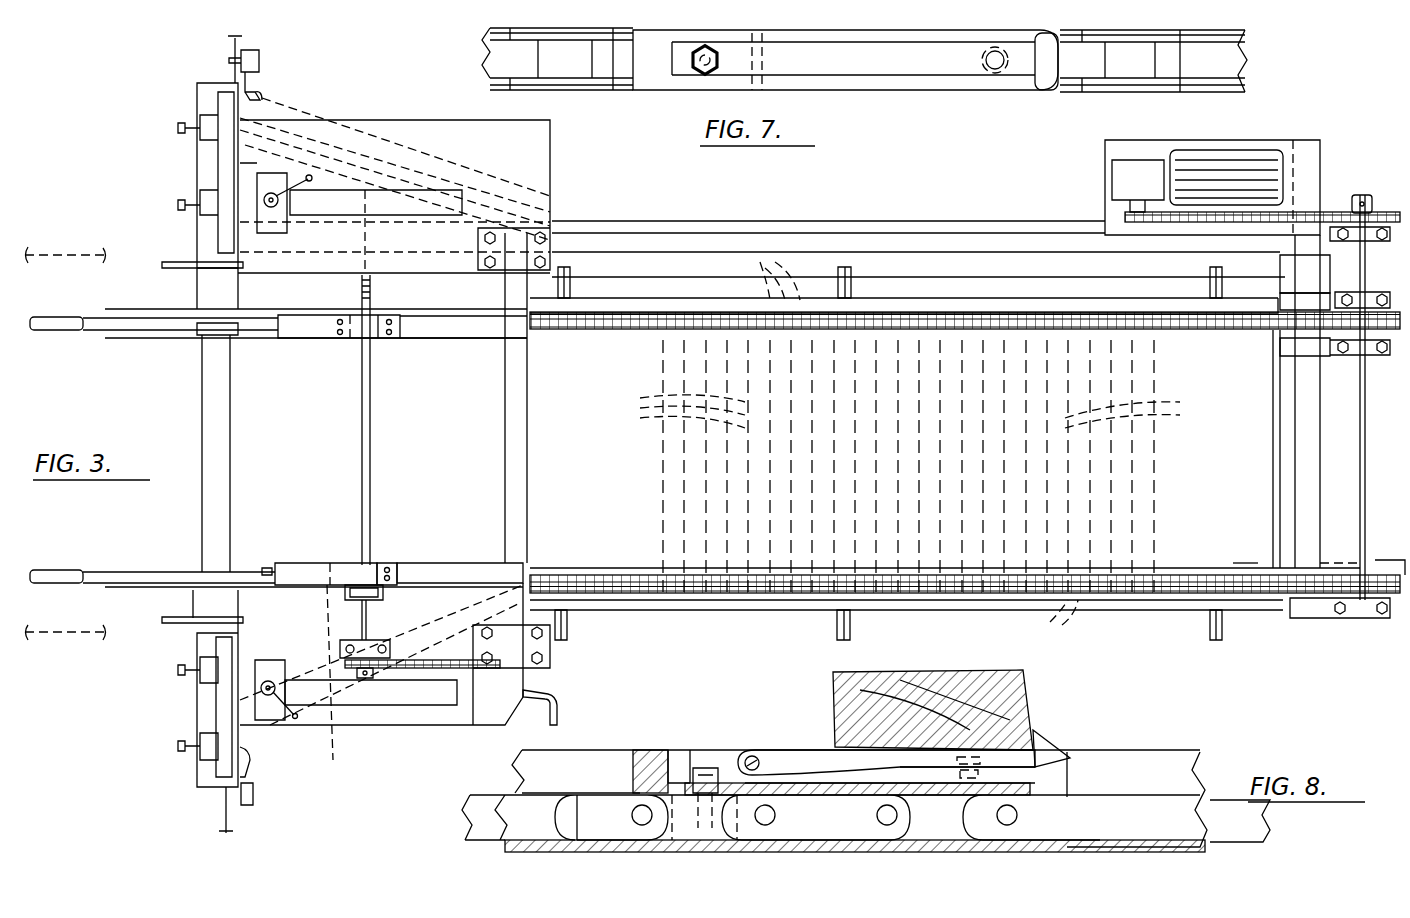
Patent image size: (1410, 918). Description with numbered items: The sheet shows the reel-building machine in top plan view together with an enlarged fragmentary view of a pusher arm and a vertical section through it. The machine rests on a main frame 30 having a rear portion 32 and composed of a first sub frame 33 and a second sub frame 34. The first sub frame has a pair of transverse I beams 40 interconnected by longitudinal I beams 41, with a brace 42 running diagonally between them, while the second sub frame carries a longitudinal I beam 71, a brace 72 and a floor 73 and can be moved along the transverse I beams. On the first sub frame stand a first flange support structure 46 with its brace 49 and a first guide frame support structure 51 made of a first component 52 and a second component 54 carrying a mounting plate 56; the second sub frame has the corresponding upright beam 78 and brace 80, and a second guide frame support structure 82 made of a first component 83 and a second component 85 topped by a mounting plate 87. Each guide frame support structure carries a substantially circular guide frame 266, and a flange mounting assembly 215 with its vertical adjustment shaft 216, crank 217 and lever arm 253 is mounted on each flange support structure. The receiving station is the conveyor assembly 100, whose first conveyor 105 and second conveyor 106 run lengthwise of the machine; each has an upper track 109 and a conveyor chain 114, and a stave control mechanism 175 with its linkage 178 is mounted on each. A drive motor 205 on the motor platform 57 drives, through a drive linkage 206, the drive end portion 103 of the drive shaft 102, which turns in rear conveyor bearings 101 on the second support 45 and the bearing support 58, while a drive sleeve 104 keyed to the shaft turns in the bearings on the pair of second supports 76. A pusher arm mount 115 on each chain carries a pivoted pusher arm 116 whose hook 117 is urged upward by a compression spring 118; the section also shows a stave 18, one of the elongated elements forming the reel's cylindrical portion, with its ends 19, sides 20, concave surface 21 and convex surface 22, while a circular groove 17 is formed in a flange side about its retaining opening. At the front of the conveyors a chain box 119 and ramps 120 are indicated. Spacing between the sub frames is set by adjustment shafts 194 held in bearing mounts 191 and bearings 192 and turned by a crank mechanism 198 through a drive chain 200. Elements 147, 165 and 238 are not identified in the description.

In FIG. 3, the circular groove 17 is at (1296, 550).
In FIG. 3, the staves 18 is at (904, 414).
In FIG. 3, the opposite ends 19 is at (911, 446).
In FIG. 8, the opposite sides 20 is at (835, 705).
In FIG. 8, the concave surface 21 is at (910, 672).
In FIG. 8, the convex surface 22 is at (830, 752).
In FIG. 3, the main frame 30 is at (1325, 515).
In FIG. 3, the rear portion 32 is at (1370, 572).
In FIG. 3, the first sub frame 33 is at (553, 560).
In FIG. 3, the second sub frame 34 is at (528, 343).
In FIG. 3, the transverse I beams 40 is at (232, 430).
In FIG. 3, the longitudinal I beams 41 is at (703, 221).
In FIG. 3, the brace 42 is at (333, 715).
In FIG. 3, the second support 45 is at (1325, 620).
In FIG. 3, the first flange support structure 46 is at (272, 730).
In FIG. 3, the brace 49 is at (412, 705).
In FIG. 3, the first guide frame support structure 51 is at (300, 562).
In FIG. 3, the first component 52 is at (522, 575).
In FIG. 3, the second component 54 is at (375, 562).
In FIG. 3, the mounting plate 56 is at (268, 580).
In FIG. 3, the horizontal motor platform 57 is at (1105, 152).
In FIG. 3, the bearing support 58 is at (1368, 262).
In FIG. 3, the longitudinal I beam 71 is at (972, 265).
In FIG. 3, the brace 72 is at (355, 118).
In FIG. 3, the floor 73 is at (443, 150).
In FIG. 3, the second supports 76 is at (1290, 337).
In FIG. 3, the upright beam 78 is at (270, 172).
In FIG. 3, the brace 80 is at (348, 190).
In FIG. 3, the second guide frame support structure 82 is at (305, 340).
In FIG. 3, the first component 83 is at (470, 338).
In FIG. 3, the second component 85 is at (372, 338).
In FIG. 3, the mounting plate 87 is at (258, 338).
In FIG. 3, the conveyor assembly 100 is at (628, 550).
In FIG. 3, the rear conveyor bearings 101 is at (1375, 618).
In FIG. 3, the drive shaft 102 is at (1367, 443).
In FIG. 3, the drive end portion 103 is at (1362, 270).
In FIG. 3, the drive sleeve 104 is at (1367, 358).
In FIG. 3, the first conveyor 105 is at (1180, 568).
In FIG. 3, the second conveyor 106 is at (1165, 333).
In FIG. 3, the upper track 109 is at (1137, 570).
In FIG. 8, the upper track 109 is at (1195, 770).
In FIG. 3, the conveyor chain 114 is at (1258, 595).
In FIG. 7, the conveyor chain 114 is at (1152, 32).
In FIG. 8, the conveyor chain 114 is at (1095, 820).
In FIG. 3, the pusher arm mount 115 is at (1117, 315).
In FIG. 7, the pusher arm mount 115 is at (843, 32).
In FIG. 8, the pusher arm mount 115 is at (650, 750).
In FIG. 7, the pusher arm 116 is at (900, 72).
In FIG. 8, the pusher arm 116 is at (772, 762).
In FIG. 3, the hook 117 is at (1150, 318).
In FIG. 7, the hook 117 is at (1035, 70).
In FIG. 8, the hook 117 is at (1042, 738).
In FIG. 7, the compression spring 118 is at (983, 72).
In FIG. 8, the compression spring 118 is at (978, 770).
In FIG. 3, the chain box 119 is at (45, 454).
In FIG. 3, the ramps 120 is at (104, 255).
In FIG. 3, the frame 147 is at (262, 660).
In FIG. 3, the conveyor chain 165 is at (1215, 330).
In FIG. 3, the stave control mechanism 175 is at (851, 260).
In FIG. 3, the linkage 178 is at (565, 265).
In FIG. 3, the bearing mounts 191 is at (383, 595).
In FIG. 3, the bearings 192 is at (352, 598).
In FIG. 3, the adjustment shafts 194 is at (372, 450).
In FIG. 3, the crank mechanism 198 is at (562, 710).
In FIG. 3, the drive chain 200 is at (478, 700).
In FIG. 3, the drive motor 205 is at (1225, 160).
In FIG. 3, the drive linkage 206 is at (1305, 212).
In FIG. 3, the flange mounting assembly 215 is at (197, 85).
In FIG. 3, the vertical adjustment shaft 216 is at (272, 208).
In FIG. 3, the crank 217 is at (310, 178).
In FIG. 3, the base plate 238 is at (175, 262).
In FIG. 3, the lever arm 253 is at (262, 95).
In FIG. 3, the guide frame 266 is at (172, 338).